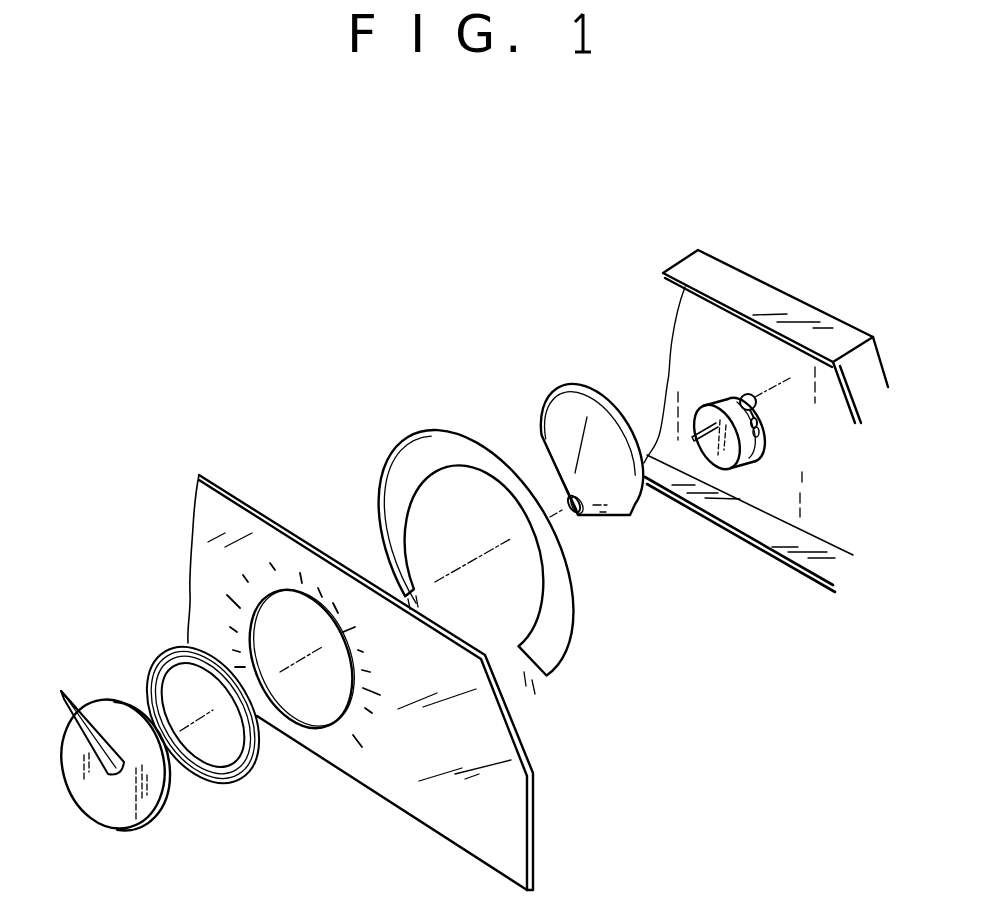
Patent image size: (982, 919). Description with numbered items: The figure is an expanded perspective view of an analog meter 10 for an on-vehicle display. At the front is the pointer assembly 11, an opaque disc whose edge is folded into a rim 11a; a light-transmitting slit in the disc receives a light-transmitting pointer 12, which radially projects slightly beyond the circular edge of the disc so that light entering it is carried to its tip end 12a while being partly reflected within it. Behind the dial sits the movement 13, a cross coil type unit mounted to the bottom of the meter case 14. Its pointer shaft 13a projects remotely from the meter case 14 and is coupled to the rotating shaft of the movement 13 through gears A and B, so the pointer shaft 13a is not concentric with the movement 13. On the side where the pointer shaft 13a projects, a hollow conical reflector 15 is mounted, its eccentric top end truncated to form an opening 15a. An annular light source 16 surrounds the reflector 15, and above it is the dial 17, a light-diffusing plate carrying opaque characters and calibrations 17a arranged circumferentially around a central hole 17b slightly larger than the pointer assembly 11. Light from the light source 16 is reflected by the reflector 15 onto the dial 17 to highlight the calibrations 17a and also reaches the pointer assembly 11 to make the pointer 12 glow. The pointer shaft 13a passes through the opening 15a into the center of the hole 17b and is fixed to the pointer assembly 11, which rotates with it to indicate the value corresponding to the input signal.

The analog meter 10 is at (458, 398).
The pointer assembly 11 is at (120, 812).
The rim 11a is at (167, 785).
The pointer 12 is at (109, 707).
The pointer tip 12a is at (66, 690).
The movement 13 is at (724, 463).
The pointer shaft 13a is at (700, 420).
The meter case 14 is at (808, 317).
The reflector 15 is at (620, 493).
The opening 15a is at (578, 514).
The annular light source 16 is at (567, 633).
The dial 17 is at (533, 805).
The characters and calibrations 17a is at (271, 570).
The hole 17b is at (331, 712).
The gear A is at (759, 433).
The gear B is at (751, 393).